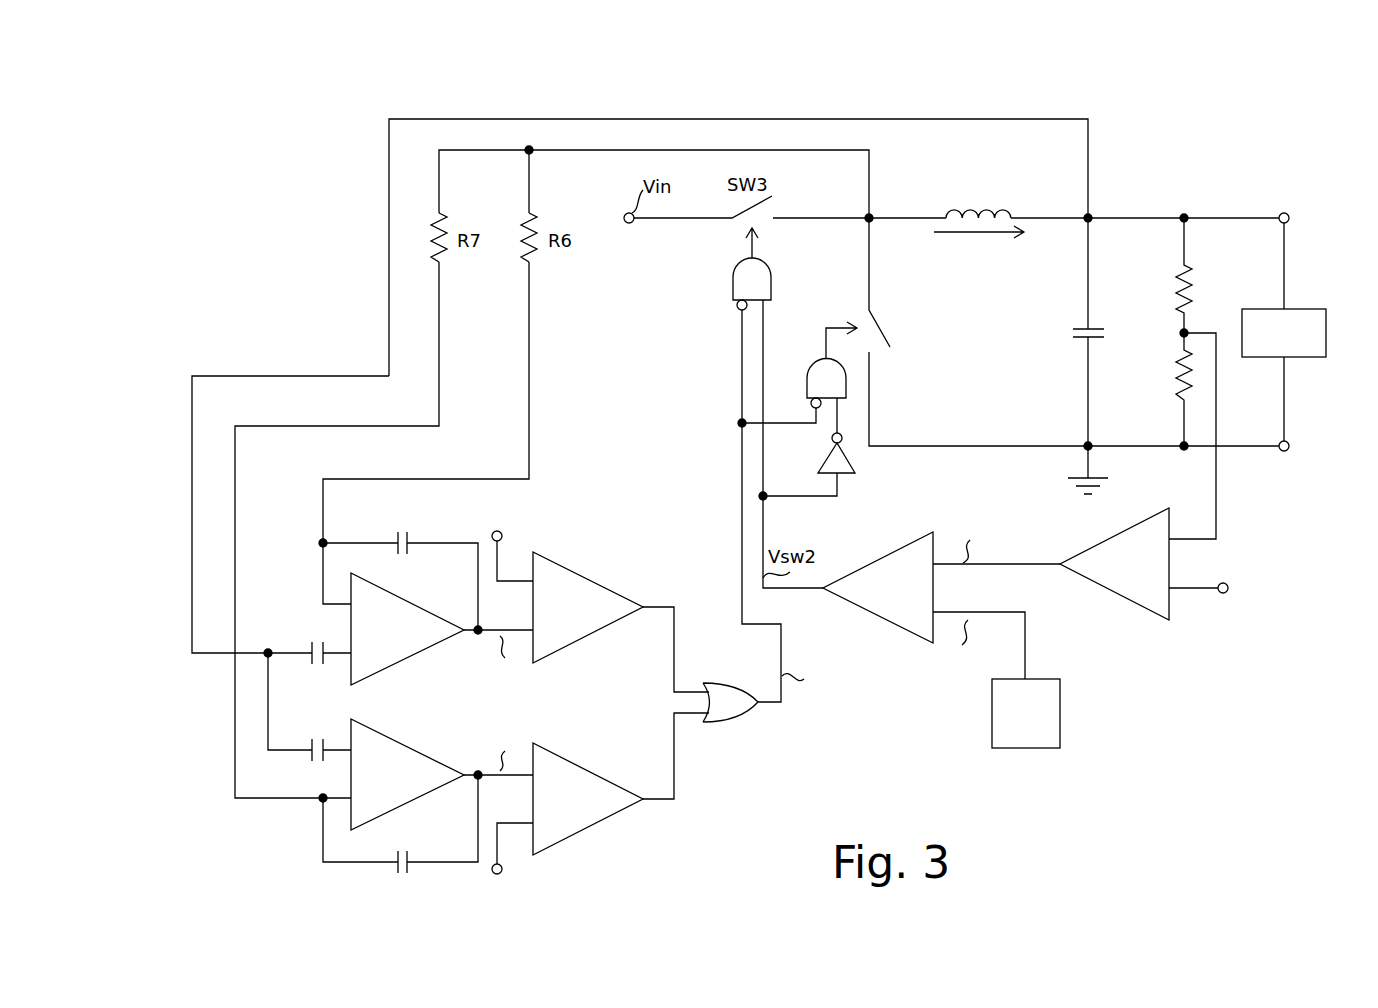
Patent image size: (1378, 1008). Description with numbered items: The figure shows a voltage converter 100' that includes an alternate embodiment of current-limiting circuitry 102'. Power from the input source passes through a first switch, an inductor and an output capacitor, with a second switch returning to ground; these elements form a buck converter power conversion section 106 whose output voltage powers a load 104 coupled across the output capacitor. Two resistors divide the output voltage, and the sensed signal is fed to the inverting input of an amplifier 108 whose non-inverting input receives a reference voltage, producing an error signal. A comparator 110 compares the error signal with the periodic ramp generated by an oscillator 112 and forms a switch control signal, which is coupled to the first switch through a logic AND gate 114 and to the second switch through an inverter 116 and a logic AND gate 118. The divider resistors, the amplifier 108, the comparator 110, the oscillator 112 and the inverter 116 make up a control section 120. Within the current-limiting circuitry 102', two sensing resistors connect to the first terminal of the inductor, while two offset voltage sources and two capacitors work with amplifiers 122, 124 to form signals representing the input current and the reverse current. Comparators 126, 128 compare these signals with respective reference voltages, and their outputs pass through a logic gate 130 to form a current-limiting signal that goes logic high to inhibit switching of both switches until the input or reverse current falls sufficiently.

The voltage converter 100' is at (738, 229).
The current-limiting circuitry 102' is at (450, 577).
The load 104 is at (1310, 358).
The power conversion section 106 is at (1016, 387).
The amplifier 108 is at (1070, 557).
The comparator 110 is at (882, 557).
The oscillator 112 is at (1060, 683).
The logic AND gate 114 is at (734, 270).
The inverter 116 is at (848, 476).
The logic AND gate 118 is at (815, 358).
The control section 120 is at (1092, 625).
The amplifier 122 is at (393, 596).
The amplifier 124 is at (393, 739).
The comparator 126 is at (600, 581).
The comparator 128 is at (600, 777).
The logic gate 130 is at (742, 722).